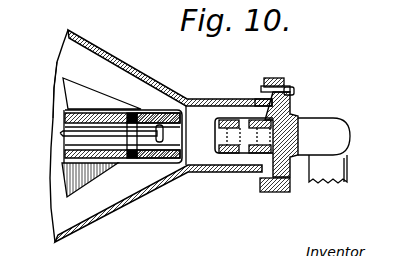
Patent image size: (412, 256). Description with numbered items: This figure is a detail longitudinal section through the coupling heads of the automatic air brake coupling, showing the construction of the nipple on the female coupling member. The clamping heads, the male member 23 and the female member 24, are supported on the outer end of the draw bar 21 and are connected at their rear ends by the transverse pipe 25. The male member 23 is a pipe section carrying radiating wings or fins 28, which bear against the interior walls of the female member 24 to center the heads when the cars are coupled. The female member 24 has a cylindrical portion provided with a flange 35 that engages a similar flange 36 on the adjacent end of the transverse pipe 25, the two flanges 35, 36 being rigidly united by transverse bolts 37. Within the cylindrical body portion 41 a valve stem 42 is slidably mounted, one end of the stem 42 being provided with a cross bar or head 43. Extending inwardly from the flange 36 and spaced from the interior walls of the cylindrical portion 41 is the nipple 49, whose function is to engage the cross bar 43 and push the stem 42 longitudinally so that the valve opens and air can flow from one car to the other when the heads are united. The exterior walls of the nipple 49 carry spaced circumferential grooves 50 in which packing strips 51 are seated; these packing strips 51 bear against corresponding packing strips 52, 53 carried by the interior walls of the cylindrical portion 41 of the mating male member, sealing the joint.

The draw bar 21 is at (49, 160).
The male member 23 is at (118, 166).
The female member 24 is at (159, 90).
The transverse pipe 25 is at (337, 132).
The wings or fins 28 is at (73, 94).
The flange 35 is at (258, 97).
The flange 36 is at (291, 106).
The transverse bolts 37 is at (295, 92).
The cylindrical body portion 41 is at (123, 102).
The valve stem 42 is at (85, 123).
The cross bar or head 43 is at (213, 120).
The nipple 49 is at (277, 81).
The circumferential grooves 50 is at (226, 157).
The packing strips 51 is at (258, 158).
The packing strip 52 is at (144, 179).
The packing strip 53 is at (172, 176).